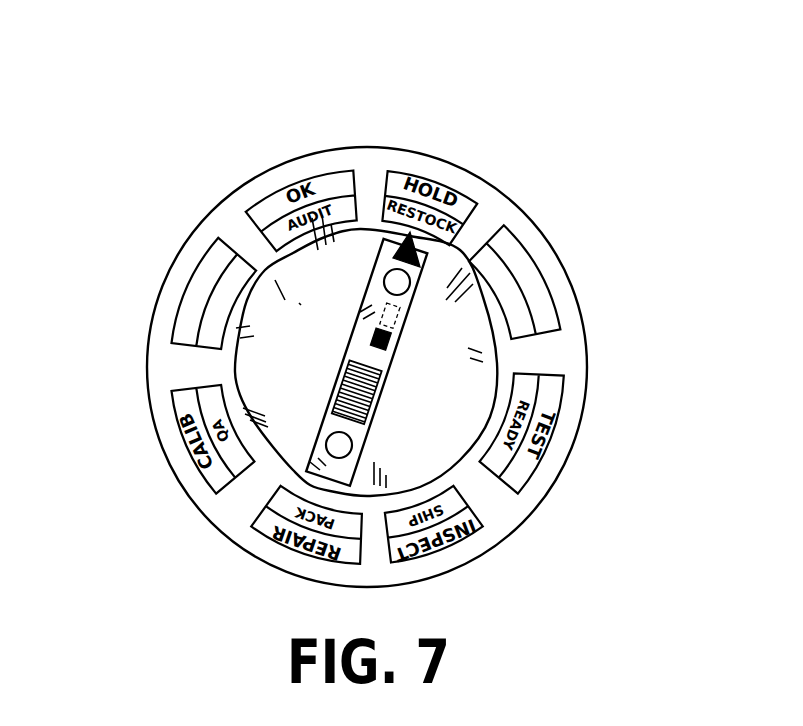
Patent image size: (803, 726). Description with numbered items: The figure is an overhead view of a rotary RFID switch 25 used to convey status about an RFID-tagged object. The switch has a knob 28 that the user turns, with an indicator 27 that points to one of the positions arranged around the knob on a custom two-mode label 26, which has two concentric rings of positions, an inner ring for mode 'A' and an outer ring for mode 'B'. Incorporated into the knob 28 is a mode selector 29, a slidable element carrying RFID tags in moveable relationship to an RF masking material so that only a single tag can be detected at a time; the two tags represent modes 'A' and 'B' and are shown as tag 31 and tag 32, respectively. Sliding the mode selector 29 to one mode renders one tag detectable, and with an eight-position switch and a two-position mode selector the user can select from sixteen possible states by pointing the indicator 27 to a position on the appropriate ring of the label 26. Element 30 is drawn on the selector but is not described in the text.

The rotary RFID switch 25 is at (473, 172).
The two-mode label 26 is at (537, 310).
The indicator 27 is at (386, 262).
The knob 28 is at (225, 355).
The mode selector 29 is at (373, 400).
The position marker 30 is at (388, 341).
The RFID tag for mode A 31 is at (378, 281).
The RFID tag for mode B 32 is at (333, 428).